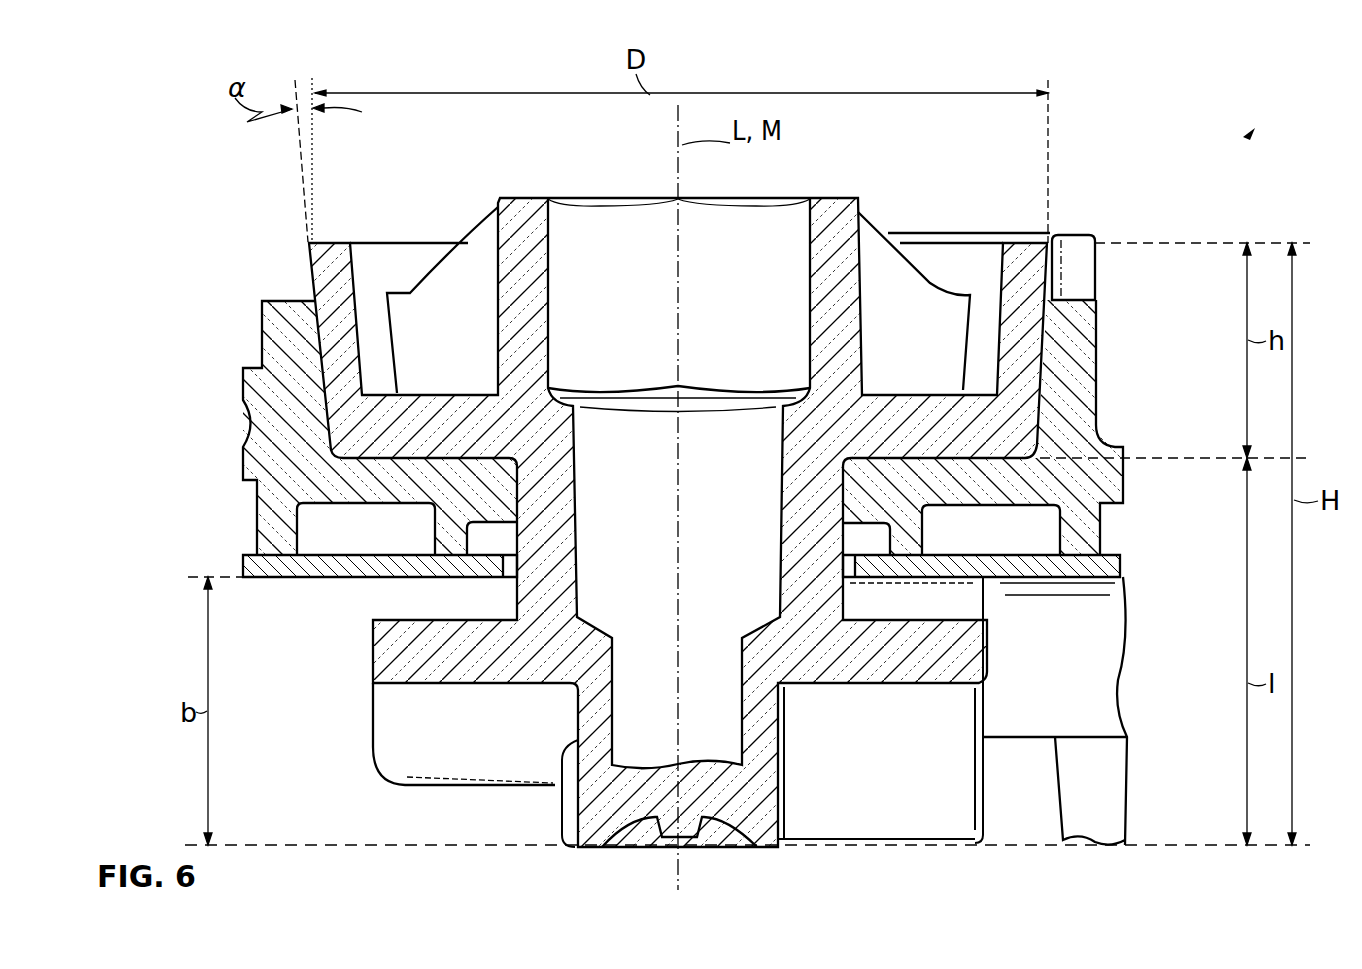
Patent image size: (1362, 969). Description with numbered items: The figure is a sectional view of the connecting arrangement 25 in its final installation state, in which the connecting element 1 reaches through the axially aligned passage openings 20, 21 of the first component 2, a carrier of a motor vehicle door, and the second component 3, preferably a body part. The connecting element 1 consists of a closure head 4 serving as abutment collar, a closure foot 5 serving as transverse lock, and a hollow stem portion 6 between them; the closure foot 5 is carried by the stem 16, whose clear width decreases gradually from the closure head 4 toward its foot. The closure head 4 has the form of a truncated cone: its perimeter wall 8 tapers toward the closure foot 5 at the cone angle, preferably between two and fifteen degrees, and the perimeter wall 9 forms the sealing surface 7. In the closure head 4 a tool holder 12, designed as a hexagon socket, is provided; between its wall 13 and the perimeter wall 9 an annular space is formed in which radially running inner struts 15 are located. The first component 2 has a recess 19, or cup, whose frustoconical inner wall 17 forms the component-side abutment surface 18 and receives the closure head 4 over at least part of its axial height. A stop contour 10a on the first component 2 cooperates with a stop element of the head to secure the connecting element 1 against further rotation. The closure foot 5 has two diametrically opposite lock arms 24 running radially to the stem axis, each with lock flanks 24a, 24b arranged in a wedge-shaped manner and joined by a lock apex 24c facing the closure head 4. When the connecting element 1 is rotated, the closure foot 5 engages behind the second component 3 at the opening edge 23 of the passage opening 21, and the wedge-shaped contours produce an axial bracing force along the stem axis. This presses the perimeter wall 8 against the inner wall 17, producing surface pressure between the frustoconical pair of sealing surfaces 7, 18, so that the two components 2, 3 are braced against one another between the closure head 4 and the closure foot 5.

The connecting element 1 is at (594, 515).
The first component 2 is at (642, 500).
The second component 3 is at (686, 579).
The closure head 4 is at (594, 515).
The closure foot 5 is at (594, 515).
The stem portion 6 is at (642, 500).
The sealing surface 7 is at (326, 393).
The perimeter wall 8 is at (594, 515).
The perimeter wall 9 is at (330, 365).
The stop contour 10a is at (270, 480).
The tool holder 12 is at (608, 250).
The wall of the tool holder 13 is at (594, 515).
The inner struts 15 is at (445, 290).
The stem 16 is at (642, 500).
The inner wall 17 is at (594, 515).
The abutment surface 18 is at (326, 393).
The recess 19 is at (310, 318).
The passage opening 20 is at (686, 579).
The passage opening 21 is at (686, 579).
The opening edge 23 is at (255, 570).
The lock arms 24 is at (594, 515).
The lock flank 24a is at (628, 793).
The lock flank 24b is at (423, 732).
The lock apex 24c is at (686, 579).
The connecting arrangement 25 is at (1243, 137).